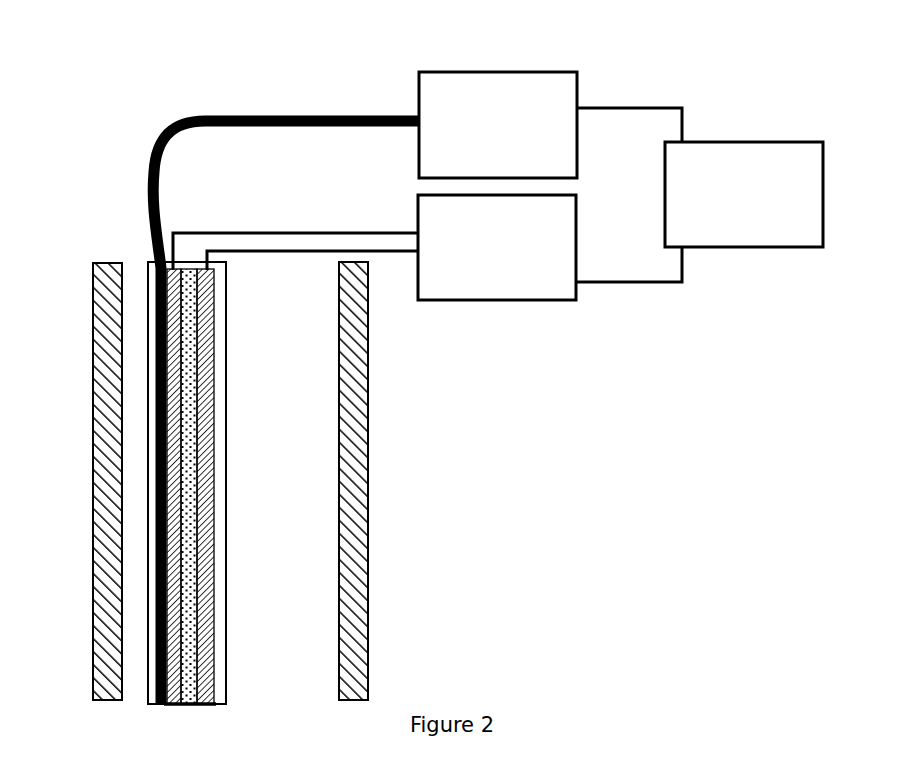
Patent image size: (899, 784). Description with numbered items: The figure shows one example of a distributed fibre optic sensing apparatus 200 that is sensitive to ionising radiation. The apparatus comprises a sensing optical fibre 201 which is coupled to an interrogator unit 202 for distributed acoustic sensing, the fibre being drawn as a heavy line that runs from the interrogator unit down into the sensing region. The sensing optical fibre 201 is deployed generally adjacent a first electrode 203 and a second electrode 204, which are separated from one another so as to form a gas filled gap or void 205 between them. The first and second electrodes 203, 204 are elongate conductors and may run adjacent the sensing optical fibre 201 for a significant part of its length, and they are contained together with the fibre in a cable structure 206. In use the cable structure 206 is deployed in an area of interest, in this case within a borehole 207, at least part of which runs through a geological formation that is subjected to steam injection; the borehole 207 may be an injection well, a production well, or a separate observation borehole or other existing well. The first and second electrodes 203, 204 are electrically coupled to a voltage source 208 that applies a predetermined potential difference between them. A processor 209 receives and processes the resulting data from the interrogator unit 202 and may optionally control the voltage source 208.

The distributed fibre optic sensing apparatus 200 is at (732, 63).
The sensing optical fibre 201 is at (155, 236).
The interrogator unit 202 is at (498, 125).
The first electrode 203 is at (180, 377).
The second electrode 204 is at (215, 433).
The gas filled gap 205 is at (190, 570).
The cable structure 206 is at (227, 638).
The borehole 207 is at (368, 532).
The voltage source 208 is at (497, 247).
The processor 209 is at (744, 194).